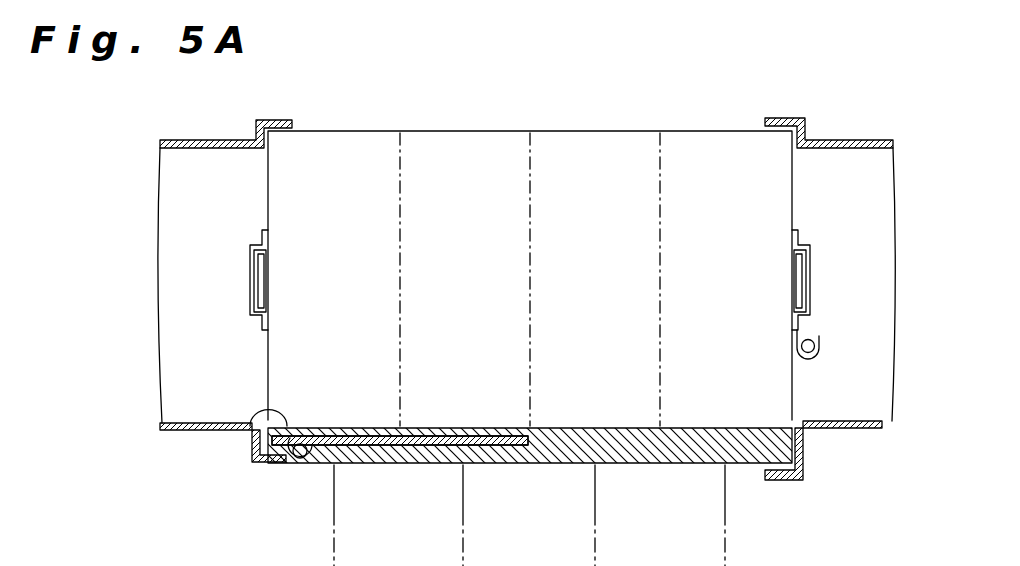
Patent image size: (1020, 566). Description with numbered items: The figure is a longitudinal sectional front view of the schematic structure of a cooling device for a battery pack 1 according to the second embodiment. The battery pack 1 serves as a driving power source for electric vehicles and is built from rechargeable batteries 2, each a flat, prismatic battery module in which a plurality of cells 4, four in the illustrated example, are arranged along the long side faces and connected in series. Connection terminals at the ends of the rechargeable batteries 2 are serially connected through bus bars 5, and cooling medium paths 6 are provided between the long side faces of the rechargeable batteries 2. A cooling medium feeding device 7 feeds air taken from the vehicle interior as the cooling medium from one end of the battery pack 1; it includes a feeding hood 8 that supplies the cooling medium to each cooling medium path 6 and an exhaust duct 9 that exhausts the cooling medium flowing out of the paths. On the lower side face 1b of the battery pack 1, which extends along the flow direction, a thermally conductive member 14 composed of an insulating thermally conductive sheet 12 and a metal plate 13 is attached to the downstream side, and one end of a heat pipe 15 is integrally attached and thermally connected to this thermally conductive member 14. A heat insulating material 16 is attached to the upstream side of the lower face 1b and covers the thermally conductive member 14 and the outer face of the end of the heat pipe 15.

The battery pack 1 is at (530, 227).
The side face of the battery pack 1b is at (641, 464).
The rechargeable battery 2 is at (526, 117).
The cell 4 is at (342, 150).
The bus bar 5 is at (262, 286).
The cooling medium path 6 is at (575, 290).
The cooling medium feeding device 7 is at (809, 103).
The feeding hood 8 is at (811, 280).
The exhaust duct 9 is at (208, 300).
The insulating thermally conductive sheet 12 is at (240, 425).
The metal plate 13 is at (251, 454).
The thermally conductive member 14 is at (174, 446).
The heat pipe 15 is at (301, 462).
The heat insulating material 16 is at (728, 472).